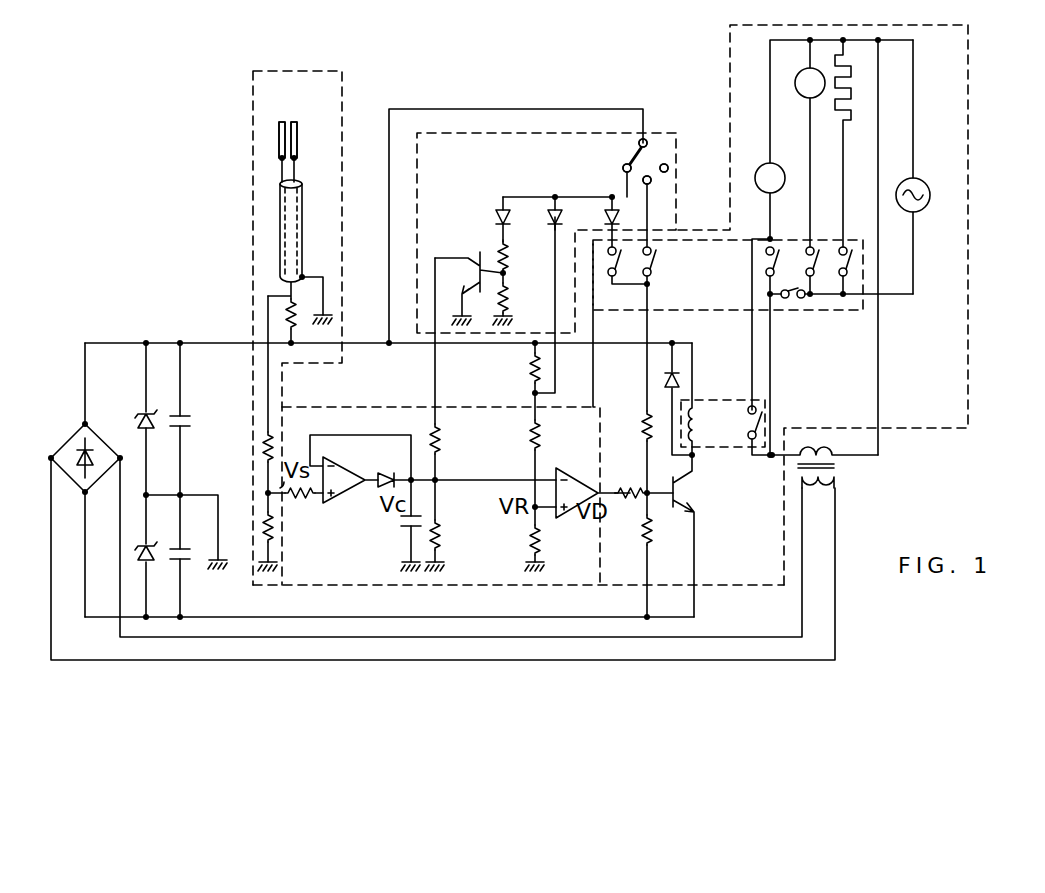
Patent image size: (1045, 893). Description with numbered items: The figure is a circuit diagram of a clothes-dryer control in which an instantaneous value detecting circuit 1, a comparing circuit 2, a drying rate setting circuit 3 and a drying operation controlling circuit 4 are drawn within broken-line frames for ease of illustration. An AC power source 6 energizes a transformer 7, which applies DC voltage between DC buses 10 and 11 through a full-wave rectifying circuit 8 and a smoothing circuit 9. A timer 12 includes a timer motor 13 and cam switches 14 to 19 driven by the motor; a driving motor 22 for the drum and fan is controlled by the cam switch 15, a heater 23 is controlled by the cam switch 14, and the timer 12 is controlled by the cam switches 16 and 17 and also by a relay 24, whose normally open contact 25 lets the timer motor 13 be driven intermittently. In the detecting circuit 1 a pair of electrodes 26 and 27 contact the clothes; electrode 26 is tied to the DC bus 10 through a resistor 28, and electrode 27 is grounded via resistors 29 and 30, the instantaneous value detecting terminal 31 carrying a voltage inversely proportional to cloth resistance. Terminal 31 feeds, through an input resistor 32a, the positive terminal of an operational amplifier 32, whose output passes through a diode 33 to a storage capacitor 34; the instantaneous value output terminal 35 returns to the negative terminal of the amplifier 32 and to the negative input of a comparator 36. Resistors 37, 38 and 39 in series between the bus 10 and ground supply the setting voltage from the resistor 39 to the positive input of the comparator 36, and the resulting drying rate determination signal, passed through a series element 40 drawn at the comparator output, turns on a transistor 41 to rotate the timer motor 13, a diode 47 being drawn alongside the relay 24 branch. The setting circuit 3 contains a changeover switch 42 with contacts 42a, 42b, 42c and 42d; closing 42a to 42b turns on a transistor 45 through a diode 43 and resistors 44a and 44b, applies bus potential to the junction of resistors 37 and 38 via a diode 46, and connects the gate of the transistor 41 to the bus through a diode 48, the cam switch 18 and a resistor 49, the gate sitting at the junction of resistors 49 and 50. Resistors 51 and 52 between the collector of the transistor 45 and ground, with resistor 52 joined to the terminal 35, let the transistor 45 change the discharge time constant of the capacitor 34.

The instantaneous value detecting circuit 1 is at (358, 216).
The comparing circuit 2 is at (505, 585).
The drying rate setting circuit 3 is at (495, 132).
The drying operation controlling circuit 4 is at (968, 282).
The AC power source 6 is at (925, 183).
The transformer 7 is at (831, 478).
The full-wave rectifying circuit 8 is at (110, 440).
The smoothing circuit 9 is at (181, 480).
The DC bus 10 is at (213, 343).
The DC bus 11 is at (226, 617).
The timer 12 is at (741, 131).
The timer motor 13 is at (788, 175).
The cam switch 14 is at (850, 244).
The cam switch 15 is at (814, 257).
The cam switch 16 is at (792, 298).
The cam switch 17 is at (782, 261).
The cam switch 18 is at (610, 276).
The cam switch 19 is at (657, 270).
The driving motor 22 is at (798, 73).
The heater 23 is at (858, 74).
The relay 24 is at (694, 430).
The normally open contact 25 is at (758, 427).
The electrode 26 is at (294, 130).
The electrode 27 is at (279, 128).
The resistor 28 is at (282, 315).
The resistor 29 is at (264, 444).
The resistor 30 is at (260, 526).
The instantaneous value detecting terminal 31 is at (268, 493).
The operational amplifier 32 is at (346, 463).
The input resistor 32a is at (300, 495).
The diode 33 is at (388, 474).
The capacitor 34 is at (400, 522).
The instantaneous value output terminal 35 is at (440, 480).
The comparator 36 is at (582, 475).
The resistor 37 is at (532, 366).
The resistor 38 is at (531, 437).
The resistor 39 is at (532, 542).
The resistor 40 is at (630, 490).
The transistor 41 is at (682, 488).
The changeover switch 42 is at (631, 140).
The contact 42a is at (646, 144).
The contact 42b is at (623, 167).
The contact 42c is at (652, 180).
The contact 42d is at (668, 168).
The diode 43 is at (496, 219).
The resistor 44a is at (508, 260).
The resistor 44b is at (508, 302).
The transistor 45 is at (478, 262).
The diode 46 is at (539, 213).
The diode 47 is at (650, 370).
The diode 48 is at (606, 221).
The resistor 49 is at (643, 424).
The resistor 50 is at (648, 530).
The resistor 51 is at (437, 440).
The resistor 52 is at (442, 533).